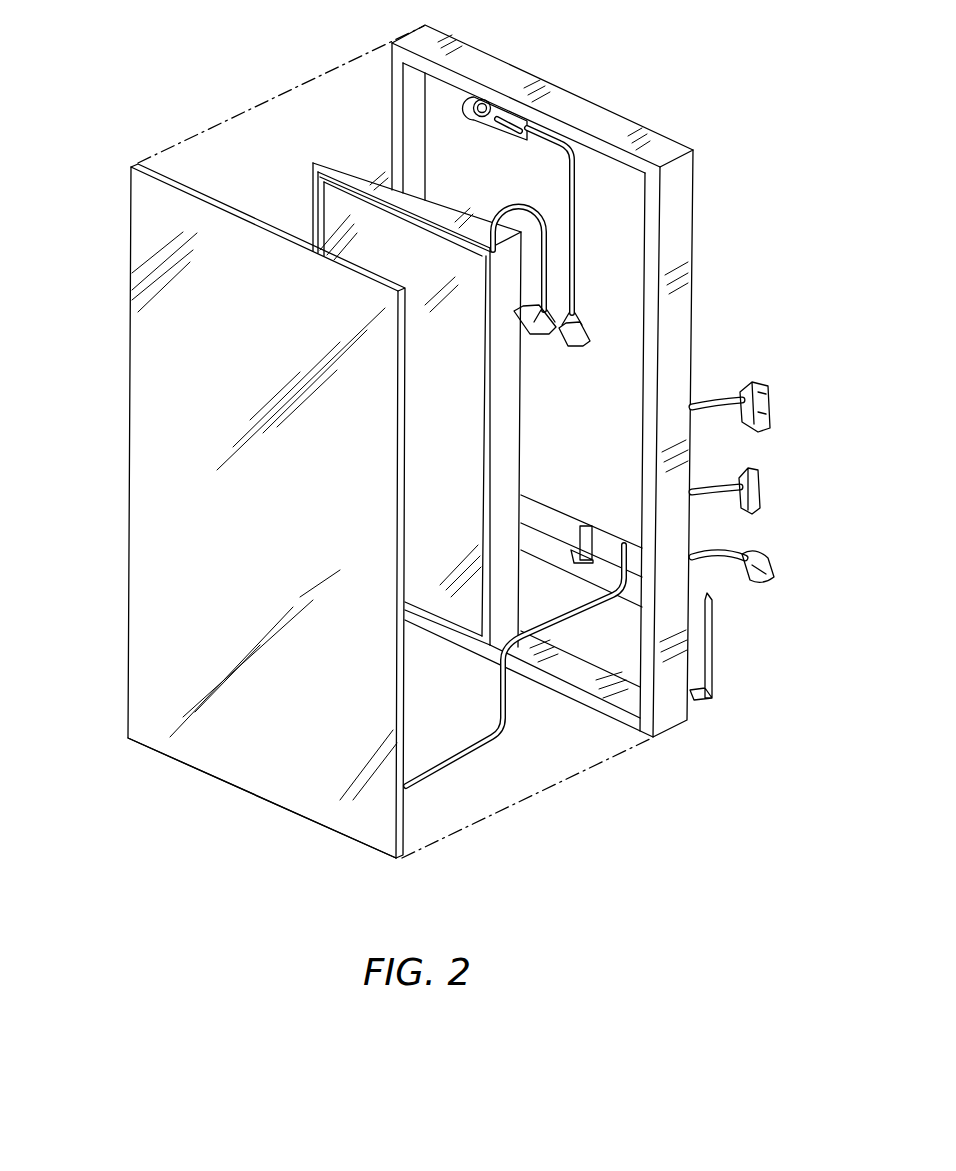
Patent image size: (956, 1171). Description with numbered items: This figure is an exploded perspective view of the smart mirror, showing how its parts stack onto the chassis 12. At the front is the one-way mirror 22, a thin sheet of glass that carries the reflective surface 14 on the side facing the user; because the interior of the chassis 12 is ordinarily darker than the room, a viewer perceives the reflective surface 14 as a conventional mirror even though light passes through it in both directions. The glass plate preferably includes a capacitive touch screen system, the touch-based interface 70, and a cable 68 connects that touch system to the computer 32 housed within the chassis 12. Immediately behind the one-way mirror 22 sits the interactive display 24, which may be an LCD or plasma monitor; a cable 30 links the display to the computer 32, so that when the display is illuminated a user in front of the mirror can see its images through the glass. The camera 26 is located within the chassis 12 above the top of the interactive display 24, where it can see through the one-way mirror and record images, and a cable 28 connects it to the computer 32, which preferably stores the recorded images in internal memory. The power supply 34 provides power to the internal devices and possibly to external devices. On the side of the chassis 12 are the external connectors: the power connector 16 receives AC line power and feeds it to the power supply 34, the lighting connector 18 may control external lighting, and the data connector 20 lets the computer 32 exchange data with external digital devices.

The chassis 12 is at (552, 416).
The reflective surface 14 is at (446, 439).
The power connector 16 is at (771, 565).
The lighting connector 18 is at (763, 488).
The data connector 20 is at (771, 398).
The one-way mirror 22 is at (266, 477).
The interactive display 24 is at (348, 168).
The camera 26 is at (493, 103).
The cable 28 is at (577, 227).
The cable 30 is at (550, 281).
The computer 32 is at (585, 347).
The power supply 34 is at (590, 648).
The cable 68 is at (468, 762).
The touch-based interface 70 is at (323, 778).